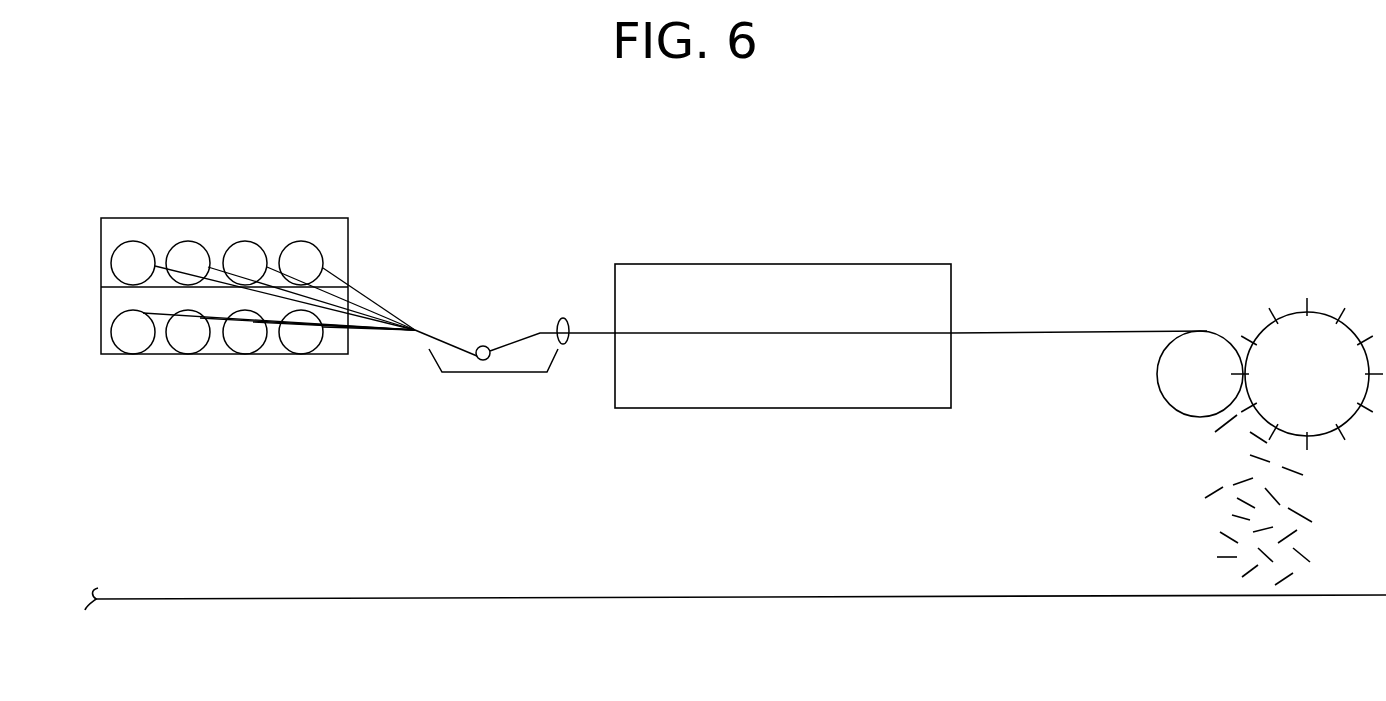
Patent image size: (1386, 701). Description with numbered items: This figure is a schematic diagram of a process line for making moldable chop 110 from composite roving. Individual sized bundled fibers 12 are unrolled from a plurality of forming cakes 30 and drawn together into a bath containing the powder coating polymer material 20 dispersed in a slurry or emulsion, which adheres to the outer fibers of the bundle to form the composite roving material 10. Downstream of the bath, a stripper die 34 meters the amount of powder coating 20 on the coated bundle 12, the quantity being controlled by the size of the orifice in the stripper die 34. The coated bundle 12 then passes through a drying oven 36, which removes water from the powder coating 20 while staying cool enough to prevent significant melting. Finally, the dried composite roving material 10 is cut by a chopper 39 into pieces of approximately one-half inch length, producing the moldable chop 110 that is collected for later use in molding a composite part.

The forming cakes 30 is at (301, 248).
The bundled fibers 12 is at (370, 292).
The powder coating polymer material 20 is at (480, 374).
The stripper die 34 is at (563, 318).
The drying oven 36 is at (768, 275).
The composite roving material 10 is at (1036, 318).
The chopper 39 is at (1320, 336).
The moldable chop 110 is at (1186, 515).